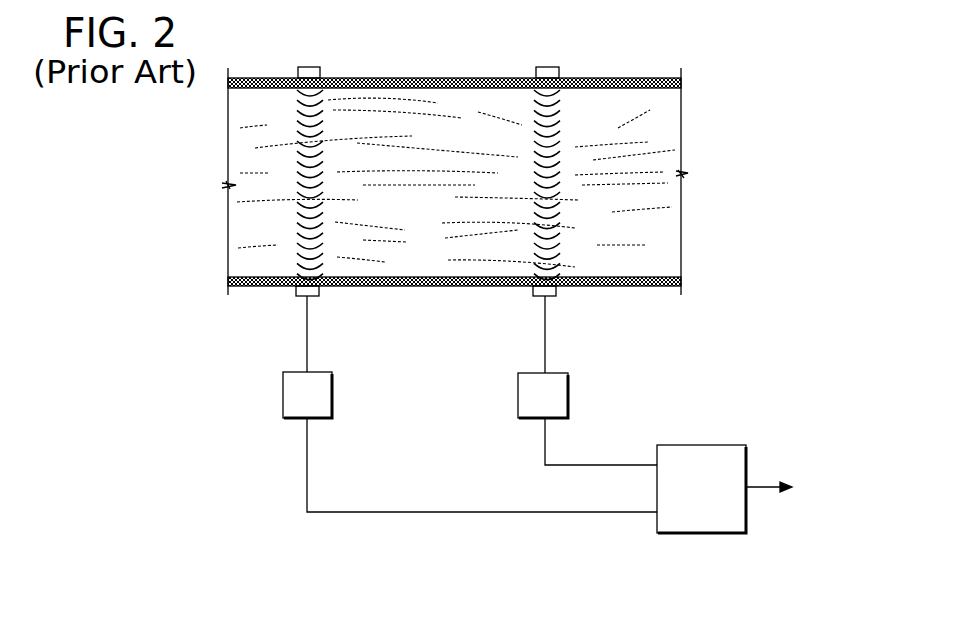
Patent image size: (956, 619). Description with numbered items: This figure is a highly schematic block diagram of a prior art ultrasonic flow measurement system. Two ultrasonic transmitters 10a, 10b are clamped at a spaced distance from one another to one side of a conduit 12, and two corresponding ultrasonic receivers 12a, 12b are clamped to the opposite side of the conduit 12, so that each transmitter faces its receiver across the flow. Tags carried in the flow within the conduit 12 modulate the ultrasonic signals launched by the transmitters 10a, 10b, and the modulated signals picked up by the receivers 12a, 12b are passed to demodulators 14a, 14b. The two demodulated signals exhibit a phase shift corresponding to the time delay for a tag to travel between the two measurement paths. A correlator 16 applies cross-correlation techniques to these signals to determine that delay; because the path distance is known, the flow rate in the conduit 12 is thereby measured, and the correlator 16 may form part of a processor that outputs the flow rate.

The ultrasonic transmitter 10a is at (300, 67).
The ultrasonic transmitter 10b is at (558, 67).
The conduit 12 is at (653, 80).
The ultrasonic receiver 12a is at (296, 288).
The ultrasonic receiver 12b is at (556, 288).
The demodulator 14a is at (283, 393).
The demodulator 14b is at (568, 391).
The correlator 16 is at (731, 458).